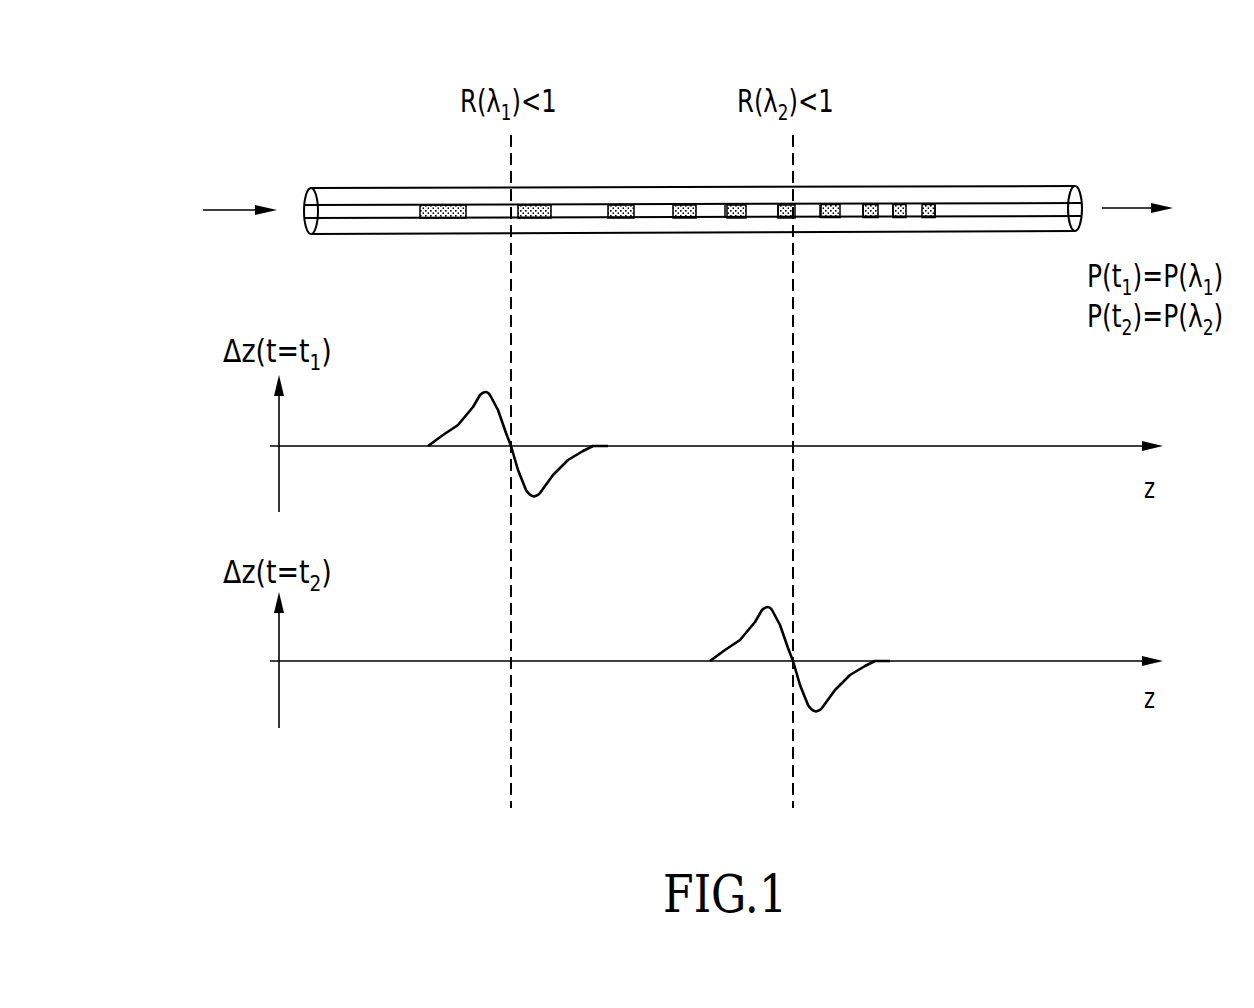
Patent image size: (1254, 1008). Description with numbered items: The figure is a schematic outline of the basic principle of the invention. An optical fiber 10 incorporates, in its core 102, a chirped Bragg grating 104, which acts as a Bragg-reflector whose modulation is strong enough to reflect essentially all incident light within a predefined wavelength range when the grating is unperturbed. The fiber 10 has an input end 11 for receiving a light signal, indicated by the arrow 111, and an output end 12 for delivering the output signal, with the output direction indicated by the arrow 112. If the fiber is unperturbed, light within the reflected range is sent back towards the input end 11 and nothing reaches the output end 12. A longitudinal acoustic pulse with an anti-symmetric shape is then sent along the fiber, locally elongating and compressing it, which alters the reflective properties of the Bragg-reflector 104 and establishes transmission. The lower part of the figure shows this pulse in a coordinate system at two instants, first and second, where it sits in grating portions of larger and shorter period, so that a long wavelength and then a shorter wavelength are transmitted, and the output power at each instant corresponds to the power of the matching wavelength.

The optical fiber 10 is at (952, 163).
The input end 11 is at (300, 192).
The output end 12 is at (1082, 194).
The core 102 is at (1013, 210).
The chirped Bragg grating 104 is at (840, 203).
The arrow 111 is at (225, 210).
The output light 112 is at (1124, 206).